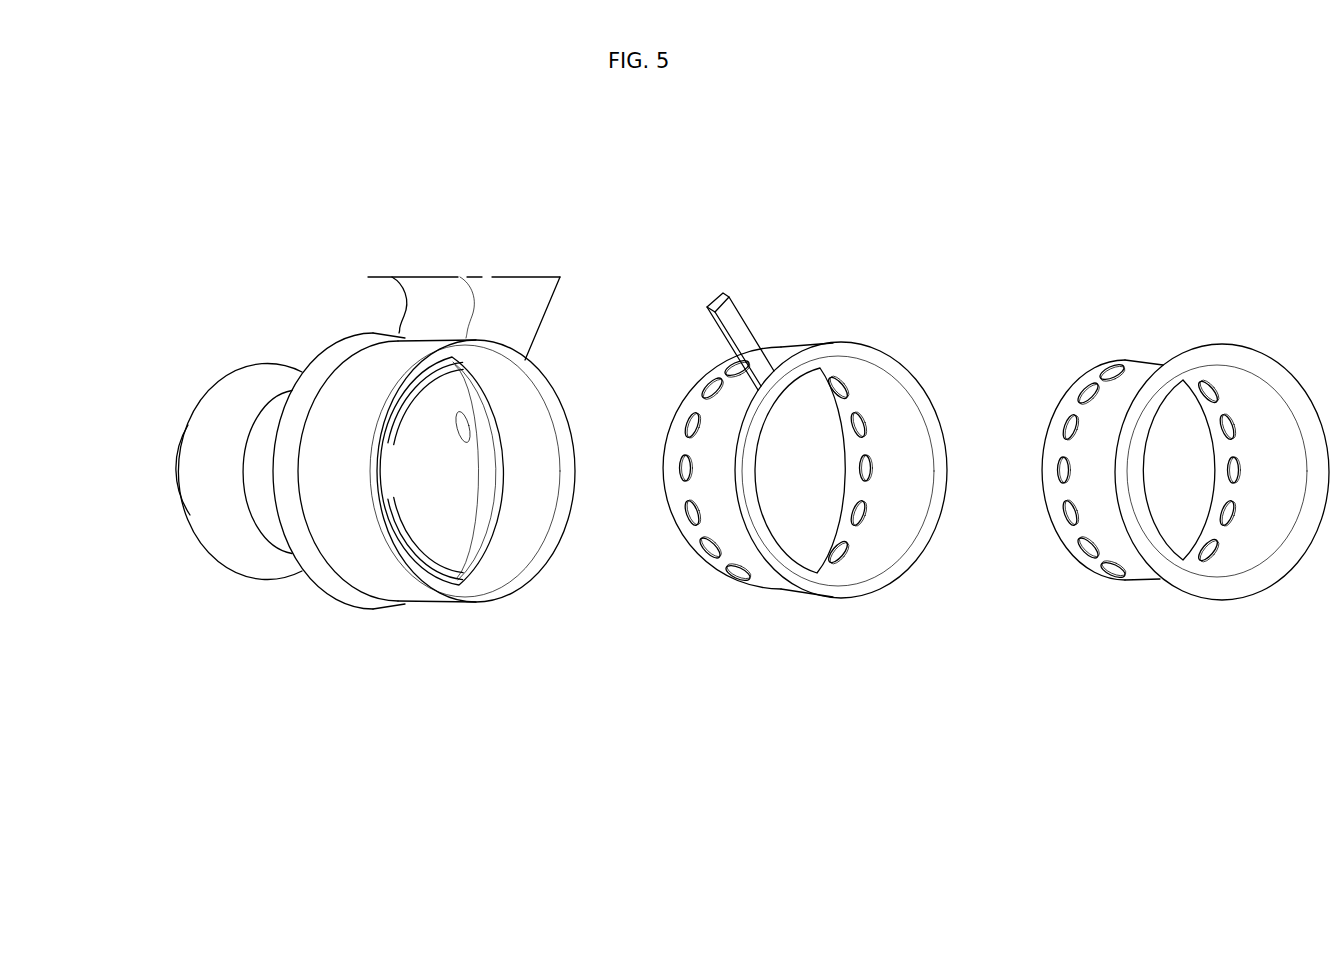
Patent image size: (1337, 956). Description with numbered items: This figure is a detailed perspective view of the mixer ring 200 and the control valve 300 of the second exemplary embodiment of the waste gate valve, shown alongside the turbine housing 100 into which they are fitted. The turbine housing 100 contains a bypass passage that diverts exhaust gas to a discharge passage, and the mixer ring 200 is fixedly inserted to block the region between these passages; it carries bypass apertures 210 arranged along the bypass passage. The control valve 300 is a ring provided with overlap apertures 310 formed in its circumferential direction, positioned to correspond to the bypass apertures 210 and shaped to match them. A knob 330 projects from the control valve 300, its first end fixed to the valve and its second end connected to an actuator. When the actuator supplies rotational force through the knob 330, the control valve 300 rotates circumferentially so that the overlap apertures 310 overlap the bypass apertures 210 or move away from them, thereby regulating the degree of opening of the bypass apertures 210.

The turbine housing 100 is at (415, 645).
The mixer ring 200 is at (1171, 505).
The bypass apertures 210 is at (1113, 580).
The control valve 300 is at (797, 473).
The overlap apertures 310 is at (737, 585).
The knob 330 is at (732, 317).